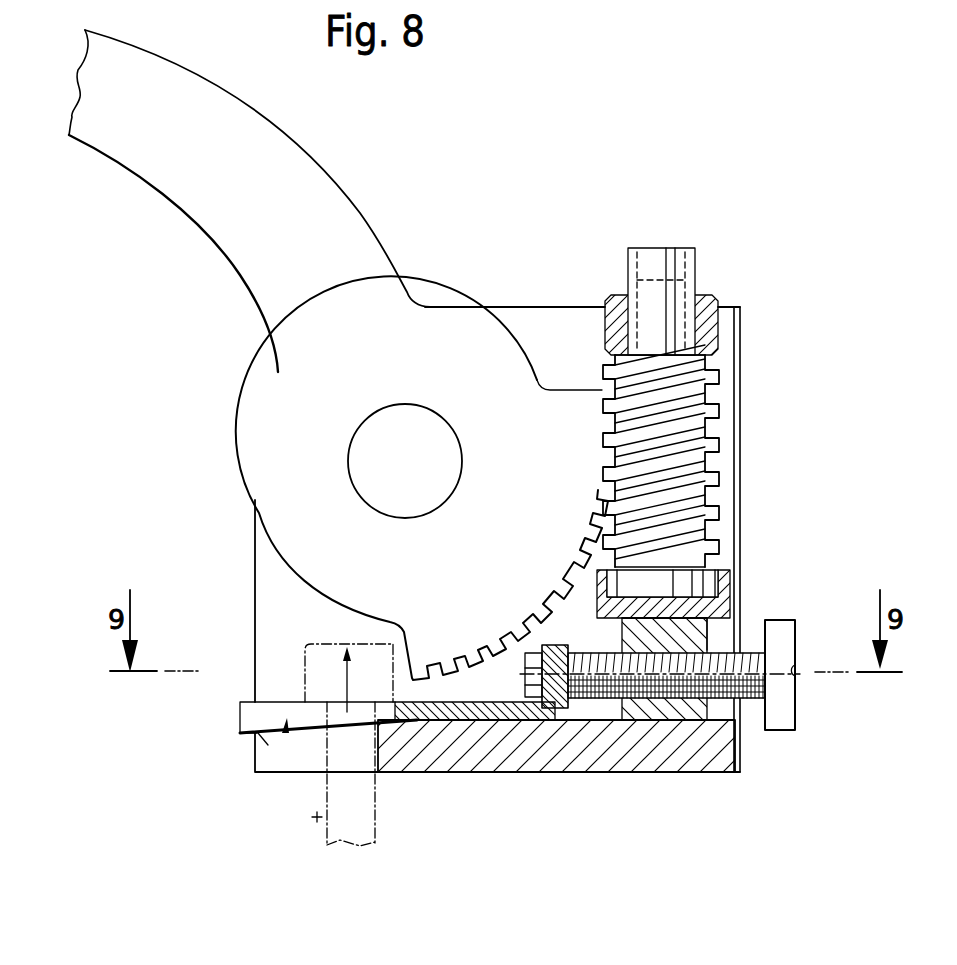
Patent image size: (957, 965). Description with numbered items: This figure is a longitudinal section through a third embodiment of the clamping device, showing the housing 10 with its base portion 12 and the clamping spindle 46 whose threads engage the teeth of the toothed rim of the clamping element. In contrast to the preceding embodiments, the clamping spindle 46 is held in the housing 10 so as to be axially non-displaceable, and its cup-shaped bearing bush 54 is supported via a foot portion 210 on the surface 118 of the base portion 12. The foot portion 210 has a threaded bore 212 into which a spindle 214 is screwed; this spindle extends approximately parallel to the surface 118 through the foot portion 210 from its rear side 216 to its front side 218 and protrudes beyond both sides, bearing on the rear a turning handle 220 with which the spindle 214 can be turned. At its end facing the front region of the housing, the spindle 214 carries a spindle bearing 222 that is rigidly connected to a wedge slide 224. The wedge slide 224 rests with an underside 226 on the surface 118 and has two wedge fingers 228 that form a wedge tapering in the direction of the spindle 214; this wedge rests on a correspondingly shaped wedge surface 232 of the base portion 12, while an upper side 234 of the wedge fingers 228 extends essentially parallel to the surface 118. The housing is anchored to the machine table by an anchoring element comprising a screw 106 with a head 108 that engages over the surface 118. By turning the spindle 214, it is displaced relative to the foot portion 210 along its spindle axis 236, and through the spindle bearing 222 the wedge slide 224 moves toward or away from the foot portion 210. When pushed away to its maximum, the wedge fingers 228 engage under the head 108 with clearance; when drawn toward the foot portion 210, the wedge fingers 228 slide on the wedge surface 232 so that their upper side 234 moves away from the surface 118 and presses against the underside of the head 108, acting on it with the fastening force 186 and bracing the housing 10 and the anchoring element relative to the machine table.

The housing 10 is at (250, 570).
The base portion 12 is at (480, 763).
The clamping spindle 46 is at (697, 420).
The bearing bush 54 is at (730, 578).
The screw 106 is at (317, 820).
The head 108 is at (307, 650).
The surface 118 is at (583, 722).
The fastening force 186 is at (347, 687).
The foot portion 210 is at (708, 628).
The threaded bore 212 is at (668, 700).
The spindle 214 is at (727, 700).
The rear side 216 is at (708, 642).
The front side 218 is at (617, 712).
The turning handle 220 is at (787, 702).
The spindle bearing 222 is at (555, 715).
The wedge slide 224 is at (272, 732).
The underside 226 is at (418, 712).
The wedge fingers 228 is at (242, 720).
The wedge surface 232 is at (263, 743).
The upper side 234 is at (253, 695).
The spindle axis 236 is at (797, 660).